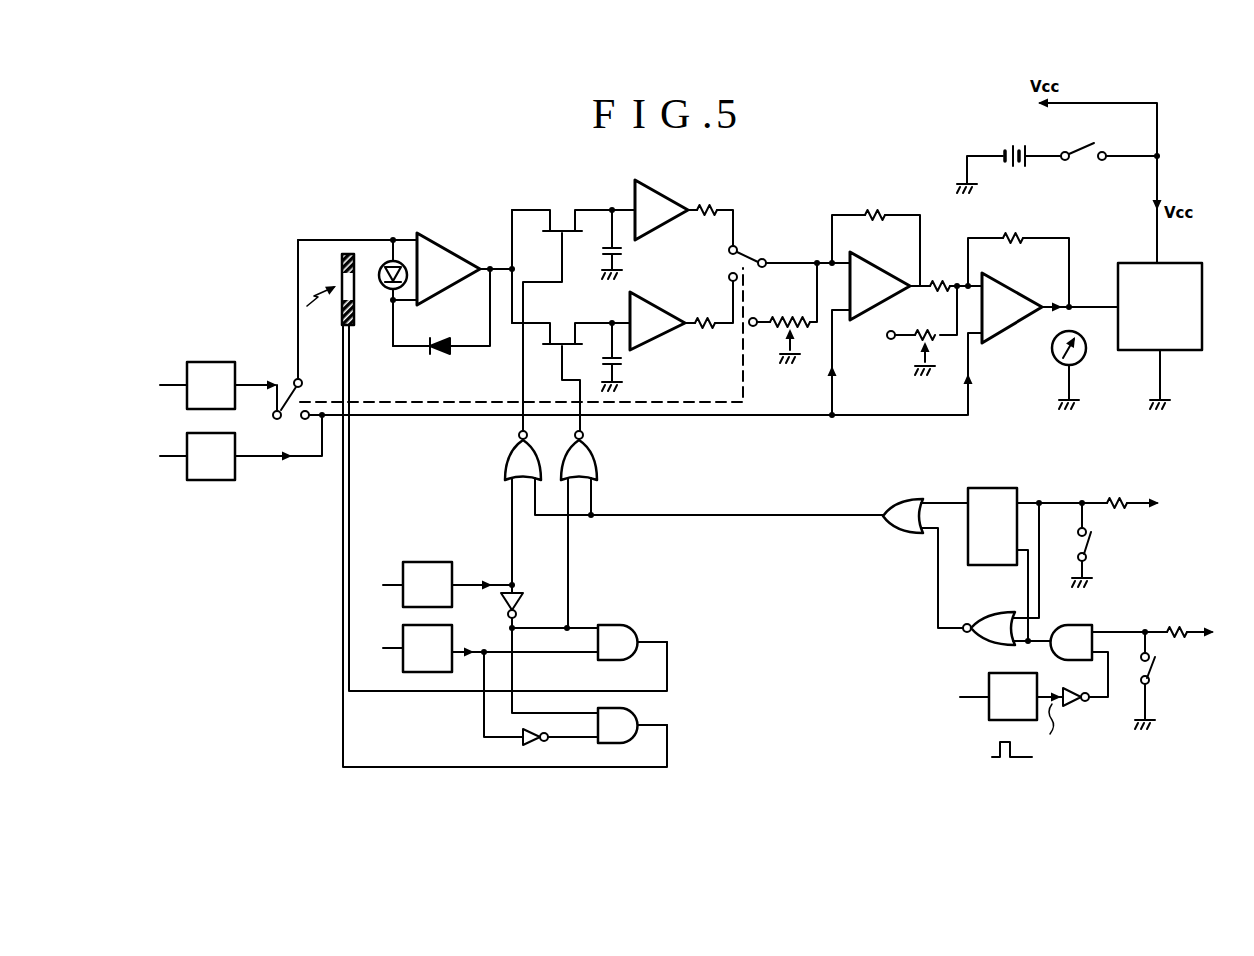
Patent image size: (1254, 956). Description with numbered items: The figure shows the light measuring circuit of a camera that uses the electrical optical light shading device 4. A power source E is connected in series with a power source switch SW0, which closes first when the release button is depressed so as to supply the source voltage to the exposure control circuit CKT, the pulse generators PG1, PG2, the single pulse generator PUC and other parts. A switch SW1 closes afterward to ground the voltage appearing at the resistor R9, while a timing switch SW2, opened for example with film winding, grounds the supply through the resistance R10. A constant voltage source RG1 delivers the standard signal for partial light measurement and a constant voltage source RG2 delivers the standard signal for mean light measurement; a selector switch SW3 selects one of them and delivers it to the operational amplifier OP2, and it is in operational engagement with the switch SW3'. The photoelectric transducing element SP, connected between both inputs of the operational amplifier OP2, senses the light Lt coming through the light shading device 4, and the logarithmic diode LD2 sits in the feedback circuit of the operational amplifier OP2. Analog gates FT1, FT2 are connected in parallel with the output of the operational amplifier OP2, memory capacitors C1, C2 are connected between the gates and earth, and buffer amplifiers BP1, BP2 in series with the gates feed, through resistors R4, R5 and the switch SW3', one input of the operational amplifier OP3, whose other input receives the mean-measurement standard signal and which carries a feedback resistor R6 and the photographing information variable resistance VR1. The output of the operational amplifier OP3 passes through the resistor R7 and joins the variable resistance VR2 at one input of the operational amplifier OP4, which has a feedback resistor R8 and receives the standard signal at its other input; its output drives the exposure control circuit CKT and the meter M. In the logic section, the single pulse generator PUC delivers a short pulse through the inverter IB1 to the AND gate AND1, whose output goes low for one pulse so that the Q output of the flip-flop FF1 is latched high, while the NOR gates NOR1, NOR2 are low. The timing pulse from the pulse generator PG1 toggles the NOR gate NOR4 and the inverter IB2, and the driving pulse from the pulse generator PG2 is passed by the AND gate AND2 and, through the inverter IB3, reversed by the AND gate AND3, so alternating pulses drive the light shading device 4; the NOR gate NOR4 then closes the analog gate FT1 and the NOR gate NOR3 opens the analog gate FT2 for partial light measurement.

The light shading device 4 is at (337, 260).
The constant voltage source RG1 is at (209, 385).
The constant voltage source RG2 is at (224, 454).
The selector switch SW3 is at (299, 415).
The light Lt is at (320, 294).
The light measurement photoelectric transducing element SP is at (389, 293).
The operational amplifier OP2 is at (466, 269).
The logarithmic diode LD2 is at (441, 323).
The analog gate FT1 is at (573, 308).
The analog gate FT2 is at (571, 364).
The buffer amplifier BP1 is at (661, 210).
The buffer amplifier BP2 is at (657, 321).
The memory capacitor C1 is at (623, 244).
The memory capacitor C2 is at (623, 357).
The resistor R4 is at (710, 212).
The resistor R5 is at (709, 304).
The changeover switch SW3' is at (789, 258).
The operational amplifier OP3 is at (869, 335).
The resistor R6 is at (876, 236).
The photographing information input variable resistance VR1 is at (783, 313).
The resistor R7 is at (946, 273).
The photographing information input variable resistance VR2 is at (922, 330).
The operational amplifier OP4 is at (1041, 344).
The resistor R8 is at (1018, 258).
The meter M is at (1061, 370).
The exposure control circuit CKT is at (1160, 336).
The power source E is at (1009, 157).
The power source switch SW0 is at (1109, 163).
The NOR gate NOR4 is at (523, 512).
The NOR gate NOR3 is at (606, 529).
The pulse generator PG1 is at (436, 583).
The pulse generator PG2 is at (478, 648).
The inverter IB2 is at (549, 653).
The inverter IB3 is at (541, 709).
The AND gate AND2 is at (631, 629).
The AND gate AND3 is at (645, 722).
The NOR gate NOR1 is at (925, 548).
The NOR gate NOR2 is at (1006, 572).
The flip-flop FF1 is at (992, 514).
The AND gate AND1 is at (1080, 647).
The resistor R9 is at (1105, 493).
The resistance R10 is at (1170, 622).
The switch SW1 is at (1102, 545).
The timing switch SW2 is at (1167, 680).
The inverter IB1 is at (1081, 708).
The single pulse generator PUC is at (995, 715).